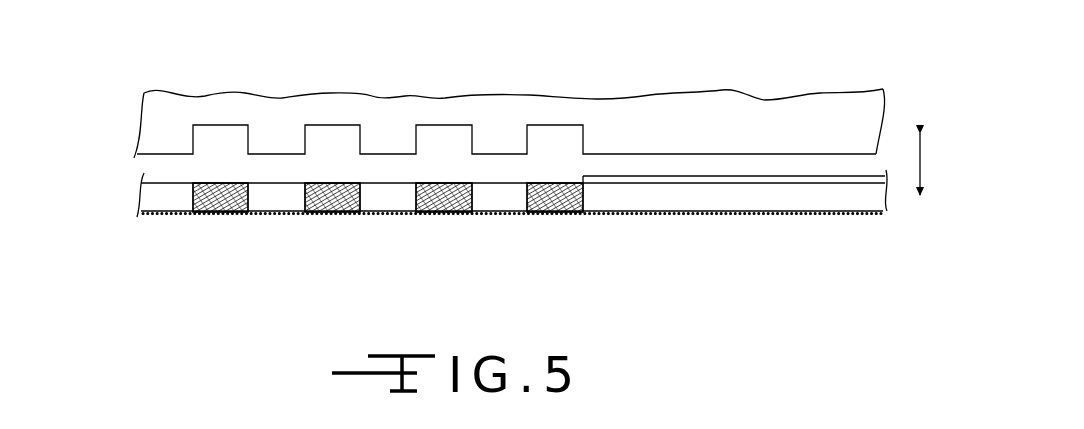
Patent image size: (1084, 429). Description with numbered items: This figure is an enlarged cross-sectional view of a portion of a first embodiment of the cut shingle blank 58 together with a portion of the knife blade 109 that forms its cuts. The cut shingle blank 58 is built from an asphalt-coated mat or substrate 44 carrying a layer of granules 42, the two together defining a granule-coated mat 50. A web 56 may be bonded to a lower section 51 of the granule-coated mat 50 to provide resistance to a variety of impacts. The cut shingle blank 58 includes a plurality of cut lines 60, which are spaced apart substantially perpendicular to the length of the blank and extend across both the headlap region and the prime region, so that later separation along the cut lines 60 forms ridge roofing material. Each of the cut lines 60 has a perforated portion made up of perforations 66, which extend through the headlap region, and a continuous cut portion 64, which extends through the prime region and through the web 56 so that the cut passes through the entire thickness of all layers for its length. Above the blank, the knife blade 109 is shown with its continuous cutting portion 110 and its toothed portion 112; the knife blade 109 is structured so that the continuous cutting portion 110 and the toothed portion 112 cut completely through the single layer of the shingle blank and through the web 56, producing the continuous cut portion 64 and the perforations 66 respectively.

The layer of granules 42 is at (688, 215).
The asphalt-coated mat 44 is at (763, 197).
The granule-coated mat 50 is at (895, 210).
The lower section 51 is at (632, 183).
The web 56 is at (886, 180).
The cut shingle blank 58 is at (109, 167).
The cut lines 60 is at (127, 193).
The continuous cut portion 64 is at (643, 200).
The perforations 66 is at (278, 192).
The knife blade 109 is at (738, 85).
The continuous cutting portion 110 is at (840, 143).
The toothed portion 112 is at (129, 128).